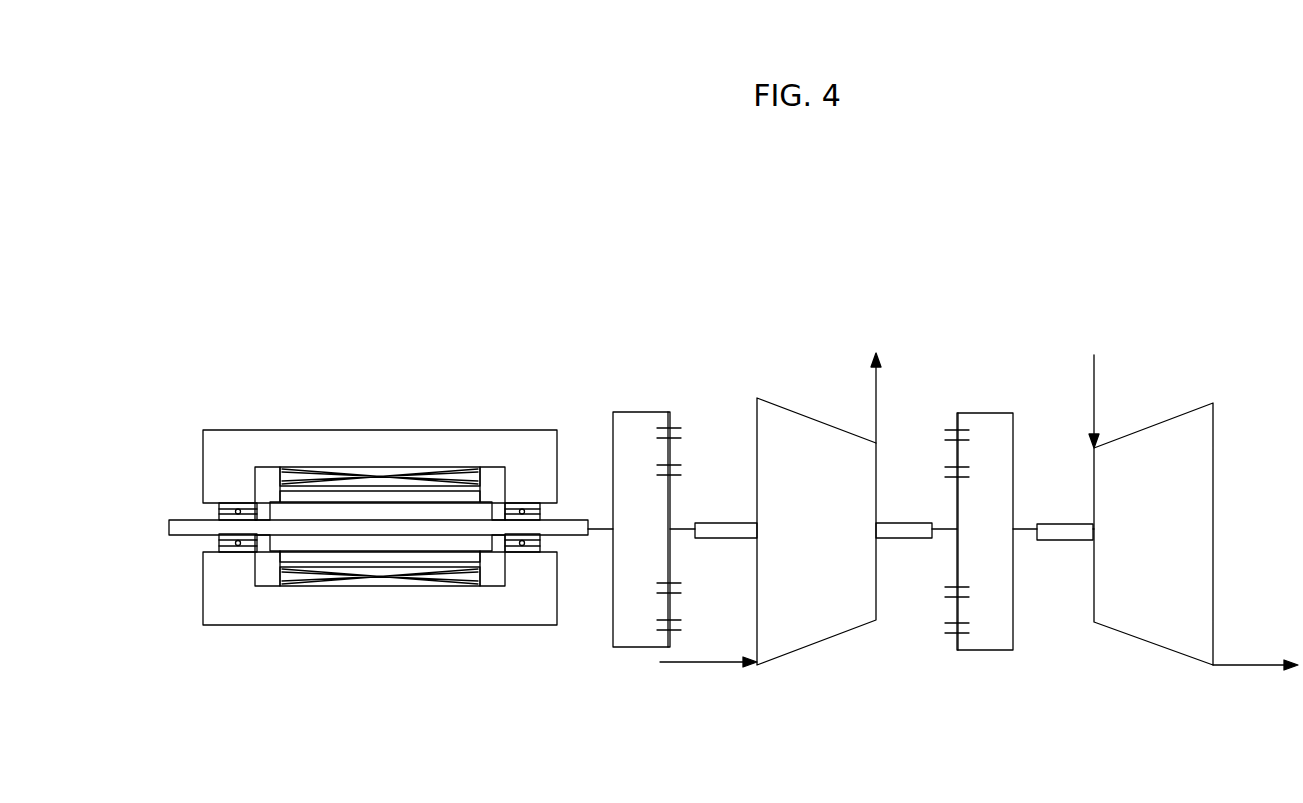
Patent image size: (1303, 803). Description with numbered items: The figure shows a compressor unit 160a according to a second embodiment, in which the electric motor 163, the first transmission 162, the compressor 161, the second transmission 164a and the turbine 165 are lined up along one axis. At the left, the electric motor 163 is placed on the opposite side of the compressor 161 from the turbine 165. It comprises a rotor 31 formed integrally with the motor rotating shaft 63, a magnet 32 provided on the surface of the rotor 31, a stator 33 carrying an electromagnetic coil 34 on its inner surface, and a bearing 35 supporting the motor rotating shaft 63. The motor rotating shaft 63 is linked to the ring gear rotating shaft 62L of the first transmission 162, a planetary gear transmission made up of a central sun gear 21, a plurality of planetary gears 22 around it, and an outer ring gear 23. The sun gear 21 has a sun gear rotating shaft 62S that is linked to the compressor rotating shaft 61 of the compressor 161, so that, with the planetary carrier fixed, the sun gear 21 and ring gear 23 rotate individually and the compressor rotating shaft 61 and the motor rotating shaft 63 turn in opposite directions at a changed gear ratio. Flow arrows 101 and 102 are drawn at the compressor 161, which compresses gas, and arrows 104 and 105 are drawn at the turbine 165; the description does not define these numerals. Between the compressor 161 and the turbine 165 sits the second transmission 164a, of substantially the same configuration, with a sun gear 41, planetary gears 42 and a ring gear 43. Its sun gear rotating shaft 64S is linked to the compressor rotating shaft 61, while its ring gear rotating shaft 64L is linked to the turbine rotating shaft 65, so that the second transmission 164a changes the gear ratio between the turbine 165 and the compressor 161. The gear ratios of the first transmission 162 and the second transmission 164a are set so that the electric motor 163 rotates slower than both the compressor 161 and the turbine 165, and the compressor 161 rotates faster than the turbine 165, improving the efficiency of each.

The compressor unit 160a is at (1133, 262).
The electric motor 163 is at (373, 340).
The rotor 31 is at (383, 503).
The magnet 32 is at (262, 493).
The stator 33 is at (337, 430).
The electromagnetic coil 34 is at (281, 492).
The bearing 35 is at (219, 545).
The motor rotating shaft 63 is at (184, 537).
The ring gear rotating shaft 62L is at (599, 531).
The first transmission 162 is at (642, 338).
The sun gear 21 is at (666, 500).
The planetary gears 22 is at (674, 607).
The ring gear 23 is at (660, 412).
The sun gear rotating shaft 62S is at (683, 532).
The compressor 161 is at (818, 645).
The intake air 101 is at (708, 665).
The compressed air outlet 102 is at (874, 388).
The compressor rotating shaft 61 is at (894, 540).
The second transmission 164a is at (990, 346).
The sun gear 41 is at (960, 504).
The planetary gears 42 is at (947, 607).
The ring gear 43 is at (967, 413).
The sun gear rotating shaft 64S is at (944, 533).
The ring gear rotating shaft 64L is at (1023, 534).
The turbine 165 is at (1152, 644).
The combustion gas inlet 104 is at (1096, 383).
The exhaust gas 105 is at (1256, 667).
The turbine rotating shaft 65 is at (1065, 542).